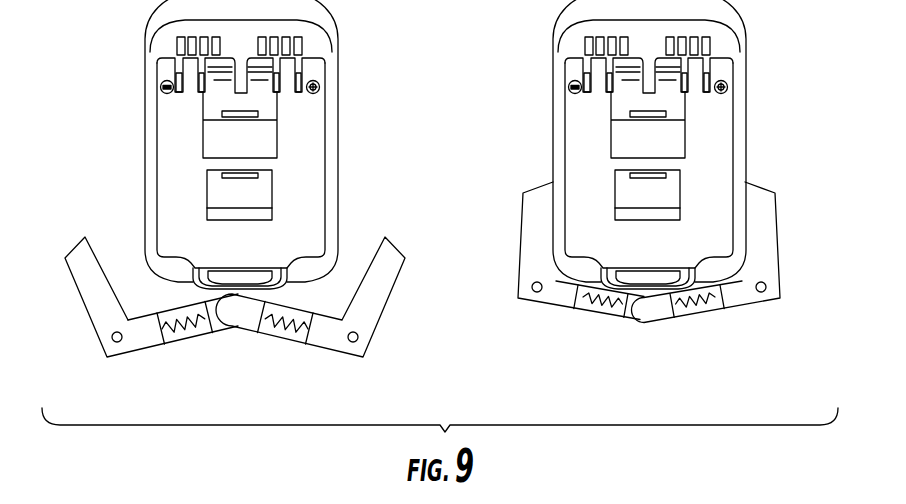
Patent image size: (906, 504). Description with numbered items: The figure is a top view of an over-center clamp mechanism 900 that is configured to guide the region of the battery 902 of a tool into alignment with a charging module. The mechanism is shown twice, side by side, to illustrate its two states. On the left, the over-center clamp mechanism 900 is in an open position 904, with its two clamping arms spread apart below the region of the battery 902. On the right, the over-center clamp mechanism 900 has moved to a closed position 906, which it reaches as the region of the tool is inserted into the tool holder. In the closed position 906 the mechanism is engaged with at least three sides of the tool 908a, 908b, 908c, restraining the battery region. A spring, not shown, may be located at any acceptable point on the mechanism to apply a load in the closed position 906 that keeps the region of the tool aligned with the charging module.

The over-center clamp mechanism 900 is at (424, 202).
The region of the battery 902 is at (132, 82).
The open position 904 is at (177, 369).
The closed position 906 is at (637, 293).
The first side of the tool 908a is at (552, 229).
The second side of the tool 908b is at (673, 286).
The third side of the tool 908c is at (750, 220).